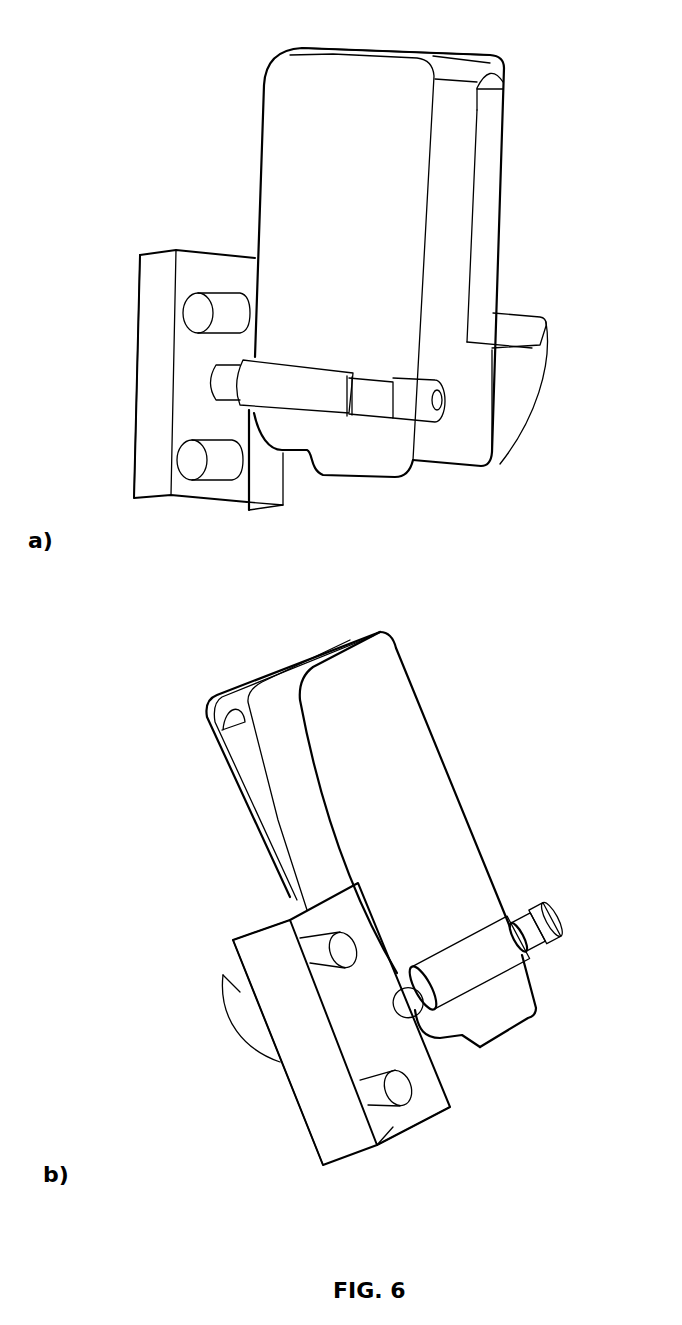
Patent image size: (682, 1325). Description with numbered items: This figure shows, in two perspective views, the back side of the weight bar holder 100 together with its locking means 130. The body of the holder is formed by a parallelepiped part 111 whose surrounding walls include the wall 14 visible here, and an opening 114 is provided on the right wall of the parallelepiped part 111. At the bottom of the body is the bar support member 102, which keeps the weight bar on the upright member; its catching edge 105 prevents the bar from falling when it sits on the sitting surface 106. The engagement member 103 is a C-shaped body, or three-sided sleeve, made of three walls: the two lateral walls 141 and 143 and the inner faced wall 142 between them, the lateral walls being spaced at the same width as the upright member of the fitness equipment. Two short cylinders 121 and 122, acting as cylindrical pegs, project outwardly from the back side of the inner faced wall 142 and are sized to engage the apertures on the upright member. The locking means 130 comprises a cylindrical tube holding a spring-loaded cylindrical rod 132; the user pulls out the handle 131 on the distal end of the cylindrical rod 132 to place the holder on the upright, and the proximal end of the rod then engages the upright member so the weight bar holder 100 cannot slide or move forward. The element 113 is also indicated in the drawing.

The surrounding wall 14 is at (290, 82).
The weight bar holder 100 is at (548, 98).
The bar support member 102 is at (510, 408).
The engagement member 103 is at (133, 233).
The catching edge 105 is at (538, 333).
The sitting surface 106 is at (502, 355).
The parallelepiped part 111 is at (415, 50).
The bracket top edge 113 is at (252, 945).
The opening 114 is at (487, 165).
The short cylinder 121 is at (198, 313).
The short cylinder 122 is at (192, 460).
The locking means 130 is at (307, 402).
The handle 131 is at (413, 405).
The cylindrical rod 132 is at (370, 407).
The lateral wall 141 is at (143, 458).
The inner faced wall 142 is at (228, 498).
The lateral wall 143 is at (263, 498).